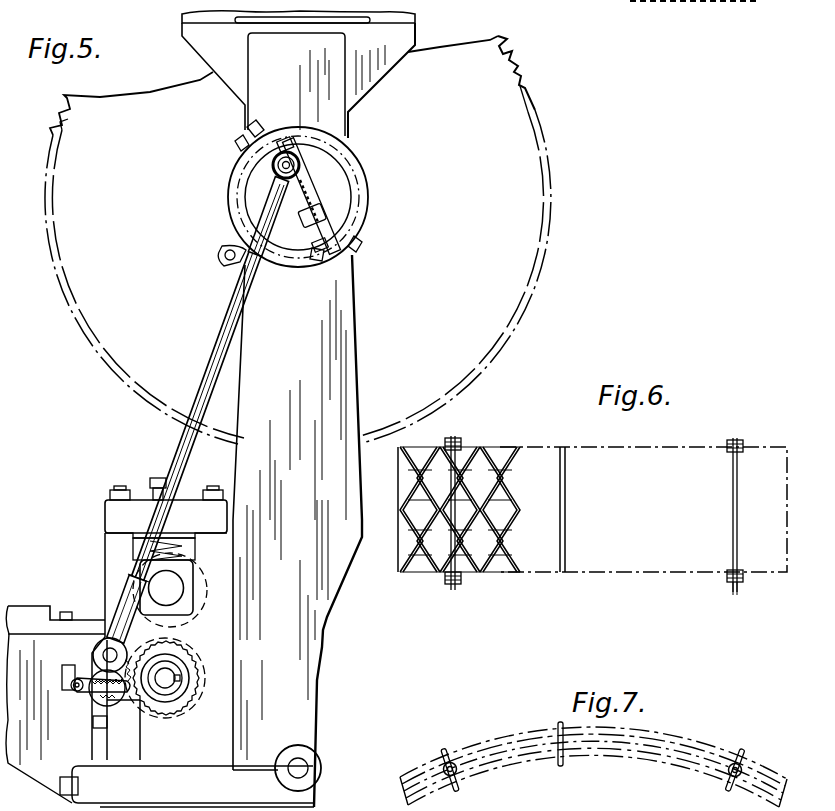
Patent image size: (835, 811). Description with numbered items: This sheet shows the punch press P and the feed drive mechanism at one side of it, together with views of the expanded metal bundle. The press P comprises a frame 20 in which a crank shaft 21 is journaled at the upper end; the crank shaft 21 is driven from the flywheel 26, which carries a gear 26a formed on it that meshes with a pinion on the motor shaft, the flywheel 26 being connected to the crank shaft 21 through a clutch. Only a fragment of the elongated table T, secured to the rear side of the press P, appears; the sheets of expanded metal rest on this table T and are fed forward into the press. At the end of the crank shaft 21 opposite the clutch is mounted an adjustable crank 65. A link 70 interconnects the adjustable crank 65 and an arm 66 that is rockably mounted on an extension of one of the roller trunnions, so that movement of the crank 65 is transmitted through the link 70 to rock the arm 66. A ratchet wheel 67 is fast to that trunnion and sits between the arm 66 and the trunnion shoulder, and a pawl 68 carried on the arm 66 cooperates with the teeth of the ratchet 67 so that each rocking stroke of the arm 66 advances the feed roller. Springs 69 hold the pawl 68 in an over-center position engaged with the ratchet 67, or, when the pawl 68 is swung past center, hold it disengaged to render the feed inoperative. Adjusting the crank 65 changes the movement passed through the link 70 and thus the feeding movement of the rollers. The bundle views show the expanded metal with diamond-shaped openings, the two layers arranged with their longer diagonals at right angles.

The frame 20 is at (363, 305).
The crank shaft 21 is at (305, 186).
The flywheel 26 is at (530, 285).
The gear 26a is at (514, 57).
The adjustable crank 65 is at (274, 167).
The arm 66 is at (150, 656).
The ratchet wheel 67 is at (190, 664).
The pawl 68 is at (88, 694).
The springs 69 is at (117, 698).
The link 70 is at (232, 304).
The punch press P is at (336, 632).
The table T is at (45, 595).